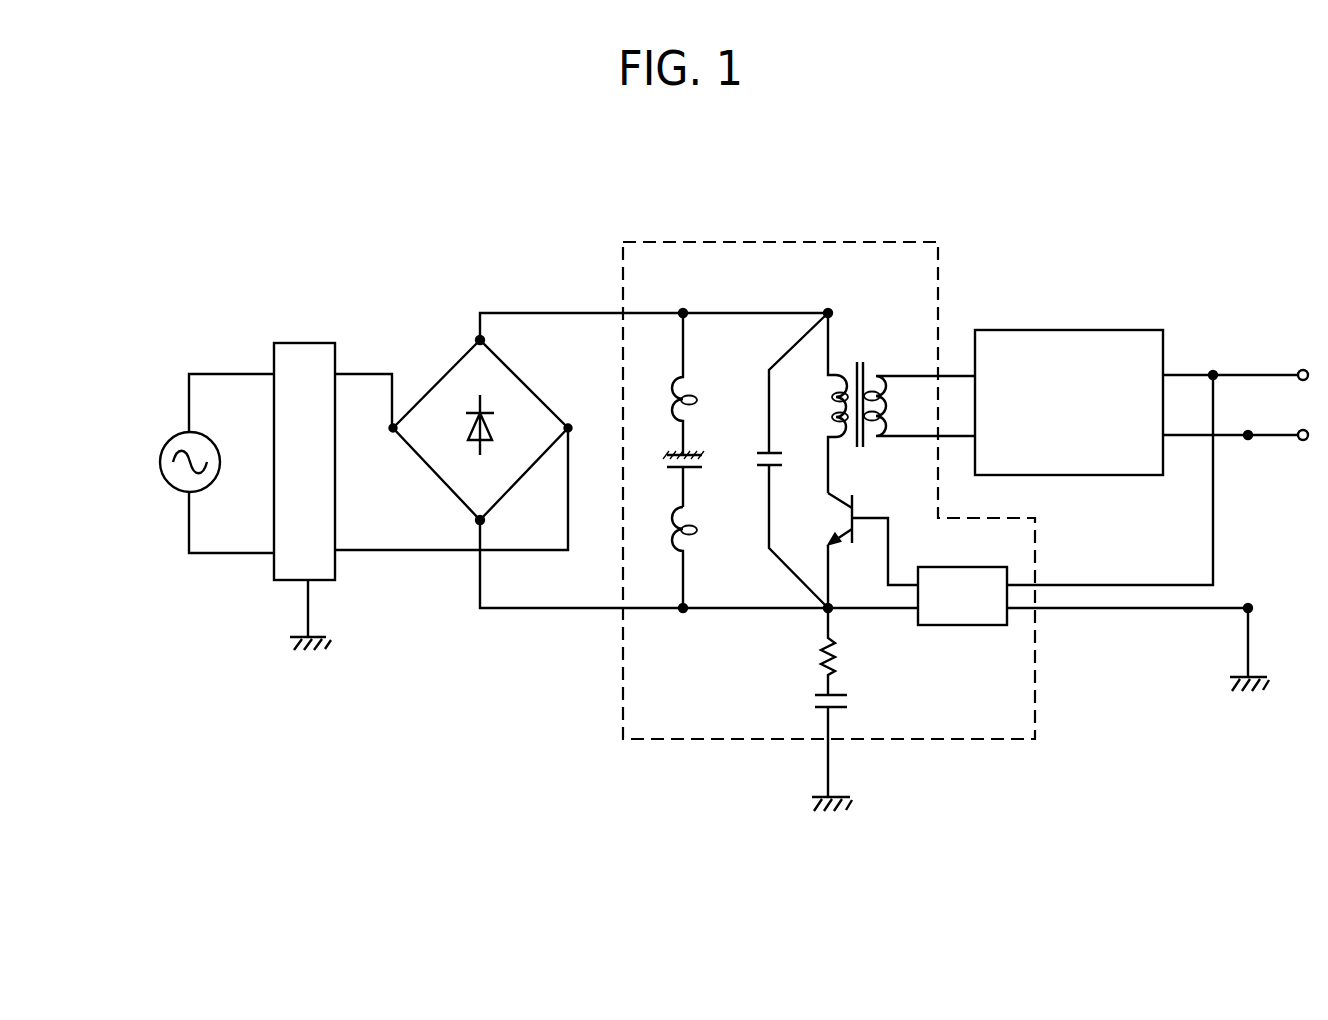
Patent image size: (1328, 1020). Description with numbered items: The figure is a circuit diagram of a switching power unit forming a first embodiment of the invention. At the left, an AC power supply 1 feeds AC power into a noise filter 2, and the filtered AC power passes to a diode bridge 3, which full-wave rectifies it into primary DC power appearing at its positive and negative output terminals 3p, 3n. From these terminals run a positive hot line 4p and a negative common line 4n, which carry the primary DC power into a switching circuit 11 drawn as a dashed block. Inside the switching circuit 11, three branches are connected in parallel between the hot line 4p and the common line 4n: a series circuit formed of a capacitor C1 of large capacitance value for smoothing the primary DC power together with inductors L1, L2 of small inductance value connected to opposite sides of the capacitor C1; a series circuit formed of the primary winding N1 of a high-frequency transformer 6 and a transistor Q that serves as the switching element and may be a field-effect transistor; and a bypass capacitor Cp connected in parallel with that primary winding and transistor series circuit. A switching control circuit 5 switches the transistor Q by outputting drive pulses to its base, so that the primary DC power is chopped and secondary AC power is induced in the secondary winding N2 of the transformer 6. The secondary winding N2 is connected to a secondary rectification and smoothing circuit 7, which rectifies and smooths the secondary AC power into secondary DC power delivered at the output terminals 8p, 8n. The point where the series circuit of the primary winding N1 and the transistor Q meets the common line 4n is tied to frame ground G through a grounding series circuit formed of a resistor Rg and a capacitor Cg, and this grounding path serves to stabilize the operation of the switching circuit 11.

The AC power supply 1 is at (169, 441).
The noise filter 2 is at (308, 343).
The diode bridge 3 is at (440, 373).
The positive output terminal 3p is at (484, 339).
The negative output terminal 3n is at (484, 519).
The positive hot line 4p is at (596, 311).
The negative common line 4n is at (590, 609).
The switching control circuit 5 is at (952, 626).
The high-frequency transformer 6 is at (866, 364).
The secondary rectification and smoothing circuit 7 is at (1118, 330).
The terminal 8p is at (1302, 369).
The terminal 8n is at (1302, 441).
The switching circuit 11 is at (858, 238).
The inductor L1 is at (699, 384).
The capacitor C1 is at (697, 479).
The inductor L2 is at (699, 557).
The bypass capacitor Cp is at (792, 460).
The primary winding N1 is at (818, 403).
The secondary winding N2 is at (919, 406).
The transistor Q is at (862, 550).
The resistor Rg is at (805, 651).
The capacitor Cg is at (811, 746).
The frame ground G is at (847, 805).